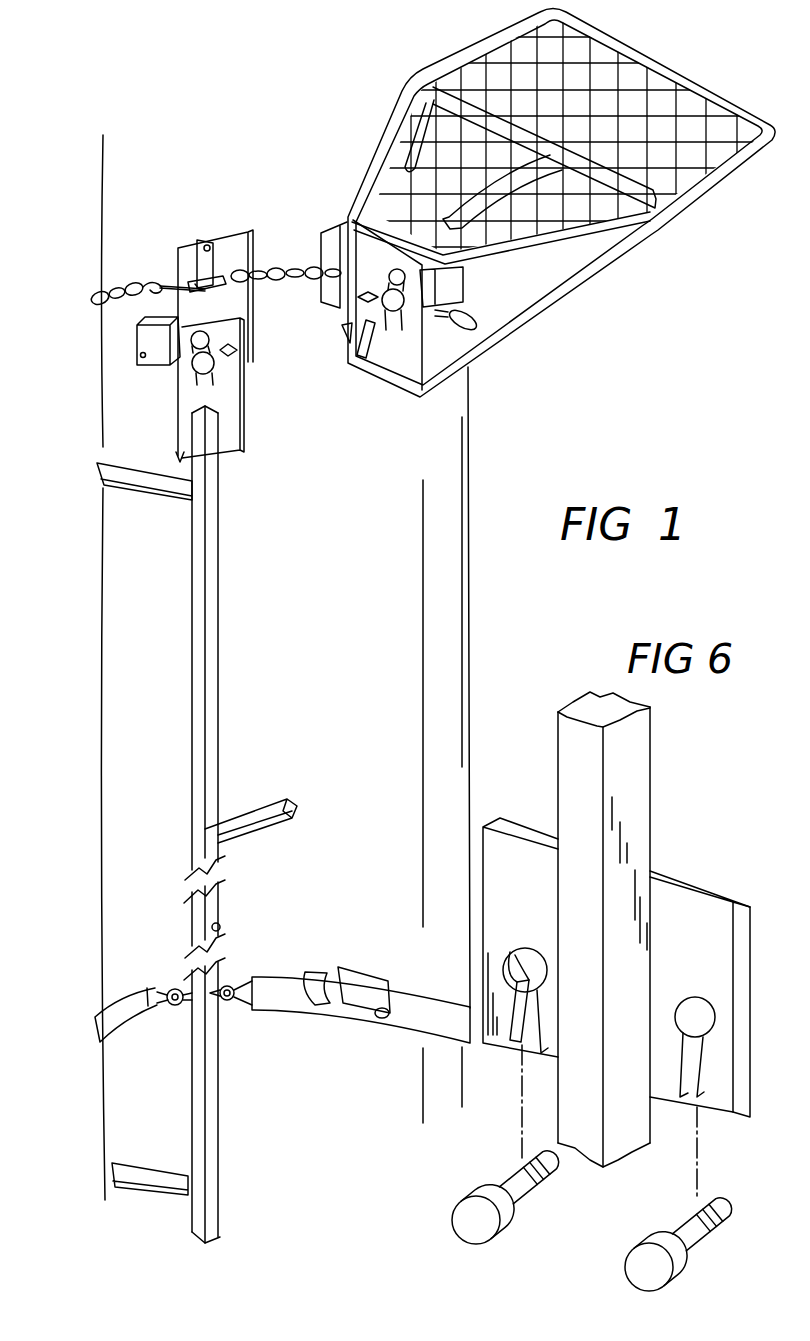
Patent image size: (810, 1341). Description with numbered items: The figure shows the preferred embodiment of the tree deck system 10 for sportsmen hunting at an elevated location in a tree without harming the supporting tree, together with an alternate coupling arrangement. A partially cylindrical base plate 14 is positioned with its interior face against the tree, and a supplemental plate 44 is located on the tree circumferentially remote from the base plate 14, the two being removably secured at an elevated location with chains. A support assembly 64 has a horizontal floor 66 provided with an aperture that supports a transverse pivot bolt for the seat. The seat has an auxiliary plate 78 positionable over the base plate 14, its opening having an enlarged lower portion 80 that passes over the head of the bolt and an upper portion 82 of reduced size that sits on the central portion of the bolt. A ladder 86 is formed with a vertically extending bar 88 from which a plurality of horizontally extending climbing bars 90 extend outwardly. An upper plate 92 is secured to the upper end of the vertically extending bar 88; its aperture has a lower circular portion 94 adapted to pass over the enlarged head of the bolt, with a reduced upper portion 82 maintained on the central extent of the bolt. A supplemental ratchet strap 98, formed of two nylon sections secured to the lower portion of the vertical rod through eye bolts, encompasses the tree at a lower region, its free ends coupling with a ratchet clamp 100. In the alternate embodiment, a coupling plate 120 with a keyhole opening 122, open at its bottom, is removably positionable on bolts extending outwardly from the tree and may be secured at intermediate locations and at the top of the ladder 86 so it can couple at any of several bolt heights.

In FIG. 1, the system for sportsmen when hunting at an elevated location in a tree 10 is at (345, 85).
In FIG. 1, the base plate 14 is at (347, 230).
In FIG. 1, the supplemental plate 44 is at (258, 228).
In FIG. 1, the support assembly 64 is at (608, 30).
In FIG. 1, the horizontal floor 66 is at (672, 130).
In FIG. 1, the auxiliary plate 78 is at (390, 360).
In FIG. 1, the enlarged lower portion 80 is at (470, 380).
In FIG. 1, the upper portion 82 is at (393, 276).
In FIG. 1, the ladder 86 is at (187, 837).
In FIG. 1, the vertically extending bar 88 is at (212, 648).
In FIG. 1, the horizontally extending climbing bars 90 is at (263, 802).
In FIG. 1, the upper plate 92 is at (243, 413).
In FIG. 1, the lower circular portion 94 is at (217, 372).
In FIG. 1, the supplemental ratchet strap 98 is at (130, 1020).
In FIG. 1, the ratchet clamp 100 is at (348, 1010).
In FIG. 6, the coupling plate 120 is at (680, 887).
In FIG. 6, the keyhole opening 122 is at (733, 907).